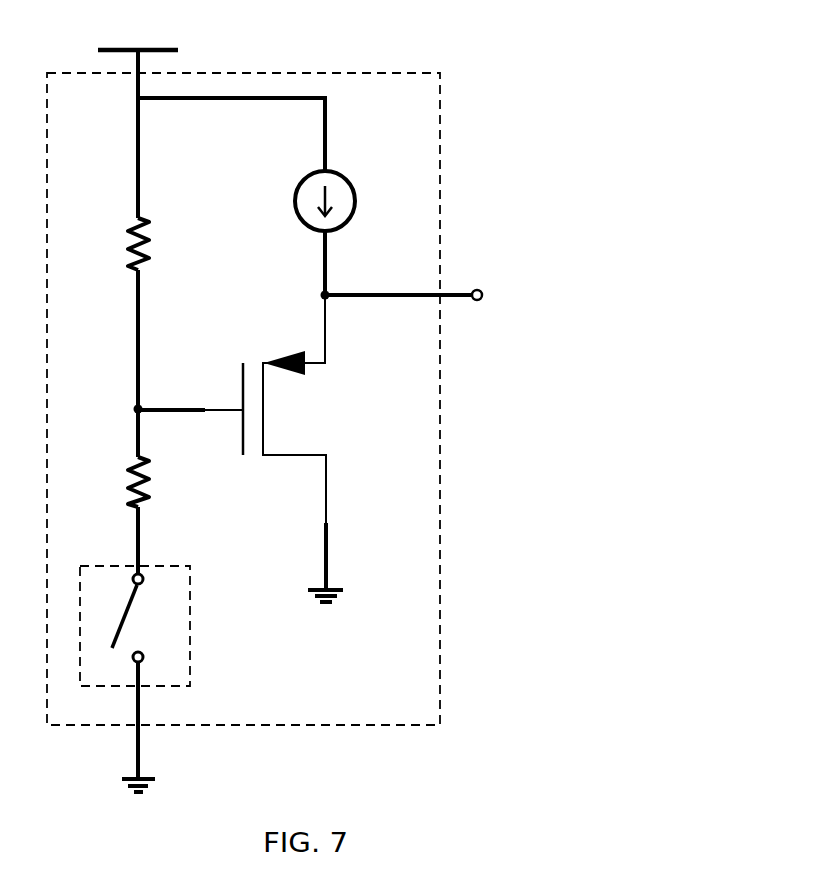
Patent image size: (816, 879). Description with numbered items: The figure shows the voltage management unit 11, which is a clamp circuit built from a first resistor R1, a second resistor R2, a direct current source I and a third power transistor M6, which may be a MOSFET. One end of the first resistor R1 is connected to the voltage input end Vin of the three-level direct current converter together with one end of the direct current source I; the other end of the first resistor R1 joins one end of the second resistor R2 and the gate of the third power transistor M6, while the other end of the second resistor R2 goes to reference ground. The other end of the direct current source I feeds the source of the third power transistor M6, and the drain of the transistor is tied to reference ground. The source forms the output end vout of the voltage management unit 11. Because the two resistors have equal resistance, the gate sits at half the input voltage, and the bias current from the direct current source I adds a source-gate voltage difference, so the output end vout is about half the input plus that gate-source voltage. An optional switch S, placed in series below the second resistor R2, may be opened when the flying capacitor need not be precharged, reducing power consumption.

The voltage management unit 11 is at (268, 369).
The voltage input end Vin is at (138, 118).
The direct current source I is at (342, 233).
The output end vout is at (434, 296).
The third power transistor M6 is at (289, 448).
The first resistor R1 is at (116, 313).
The second resistor R2 is at (116, 491).
The switch S is at (135, 672).